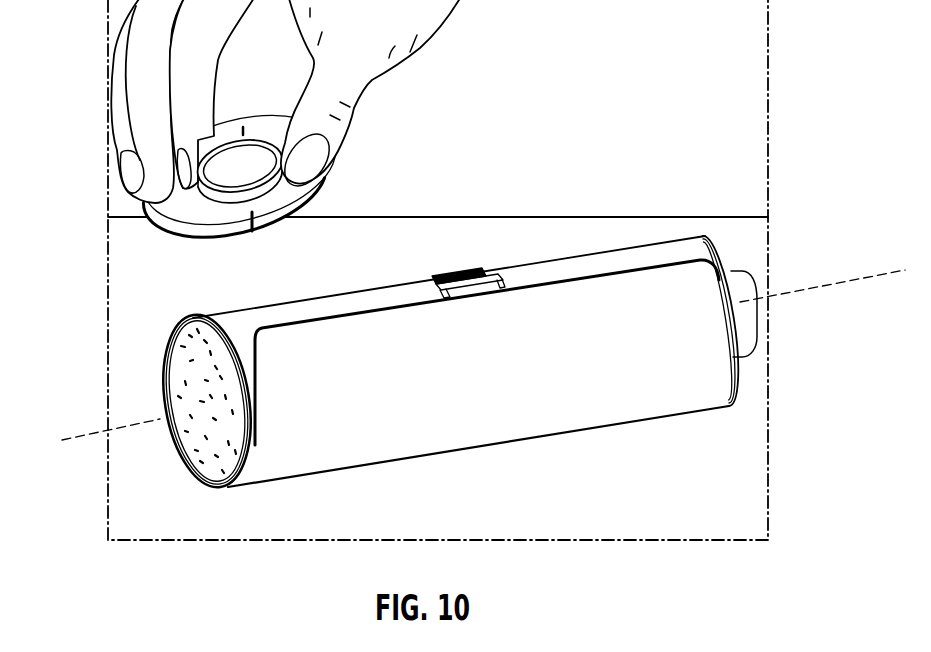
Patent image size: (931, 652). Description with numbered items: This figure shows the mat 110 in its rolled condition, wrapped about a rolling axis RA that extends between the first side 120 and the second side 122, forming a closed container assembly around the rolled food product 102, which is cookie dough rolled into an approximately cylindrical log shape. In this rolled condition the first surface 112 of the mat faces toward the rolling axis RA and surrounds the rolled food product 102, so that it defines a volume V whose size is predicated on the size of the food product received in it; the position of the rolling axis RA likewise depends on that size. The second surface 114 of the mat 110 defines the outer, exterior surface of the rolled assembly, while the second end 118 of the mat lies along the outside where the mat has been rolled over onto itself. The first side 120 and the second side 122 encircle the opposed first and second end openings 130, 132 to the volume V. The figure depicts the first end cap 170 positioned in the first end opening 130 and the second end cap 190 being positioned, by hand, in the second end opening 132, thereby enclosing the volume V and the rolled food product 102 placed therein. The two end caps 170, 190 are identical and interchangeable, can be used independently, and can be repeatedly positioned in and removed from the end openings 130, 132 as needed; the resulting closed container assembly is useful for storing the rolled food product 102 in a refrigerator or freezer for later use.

The second end cap 190 is at (323, 178).
The mat 110 is at (393, 450).
The second surface 114 is at (600, 420).
The first side 120 is at (717, 262).
The second end 118 is at (558, 258).
The first end opening 130 is at (740, 377).
The first end cap 170 is at (757, 300).
The second end opening 132 is at (163, 341).
The rolled food product 102 is at (163, 381).
The second side 122 is at (173, 450).
The first surface 112 is at (197, 478).
The rolling axis RA is at (62, 440).
The volume V is at (218, 341).